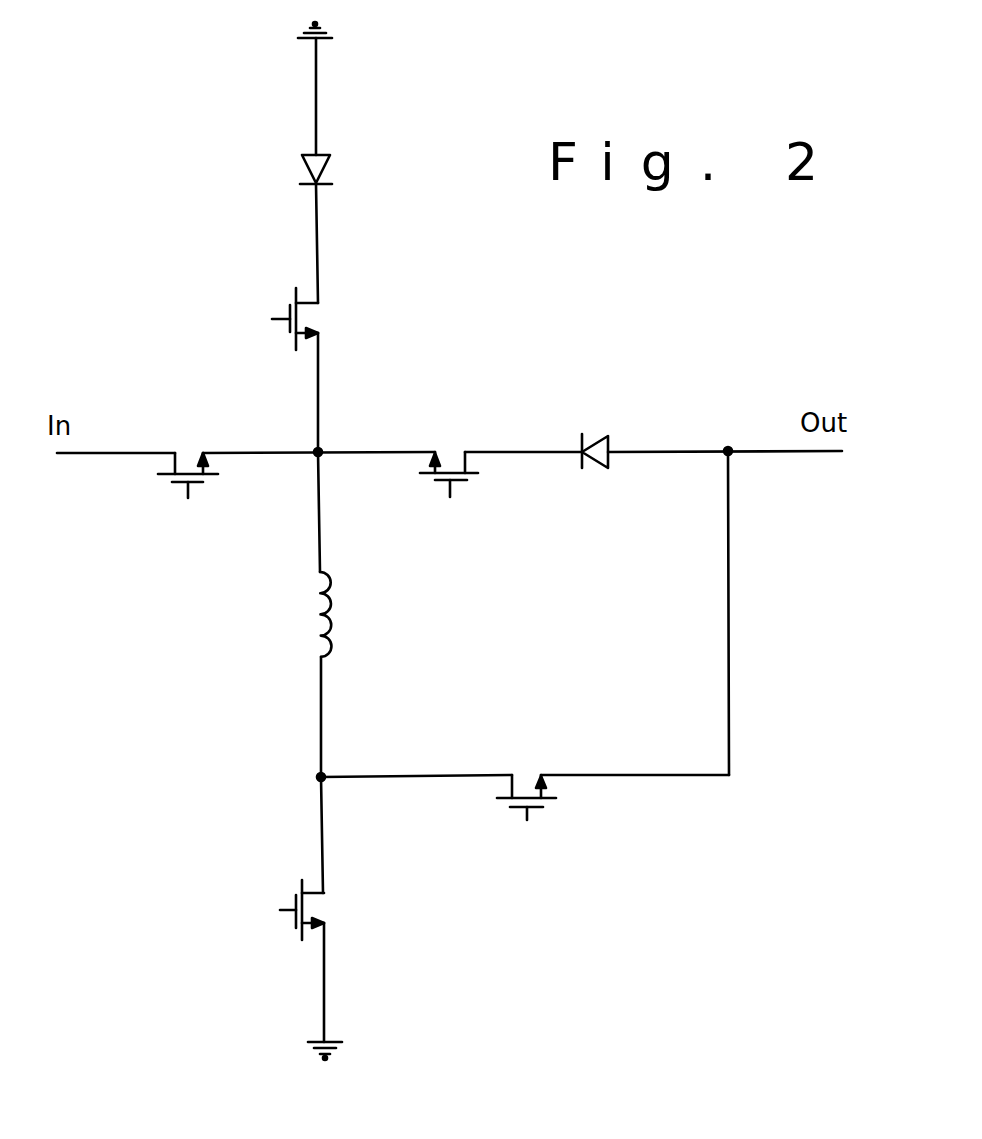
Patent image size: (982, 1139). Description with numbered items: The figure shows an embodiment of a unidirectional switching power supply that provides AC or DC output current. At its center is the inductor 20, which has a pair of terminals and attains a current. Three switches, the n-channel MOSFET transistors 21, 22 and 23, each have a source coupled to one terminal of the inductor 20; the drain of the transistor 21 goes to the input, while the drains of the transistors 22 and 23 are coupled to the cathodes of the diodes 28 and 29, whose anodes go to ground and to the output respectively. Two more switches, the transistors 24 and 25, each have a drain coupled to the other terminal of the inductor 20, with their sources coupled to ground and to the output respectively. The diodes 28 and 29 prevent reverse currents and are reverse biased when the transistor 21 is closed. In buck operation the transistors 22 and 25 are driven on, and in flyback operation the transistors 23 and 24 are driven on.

The inductor 20 is at (331, 650).
The transistor 21 is at (175, 483).
The transistor 22 is at (290, 305).
The transistor 23 is at (465, 482).
The transistor 24 is at (295, 926).
The transistor 25 is at (540, 808).
The diode 28 is at (302, 157).
The diode 29 is at (612, 437).